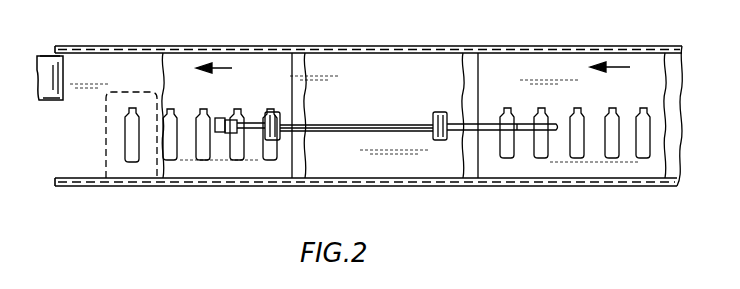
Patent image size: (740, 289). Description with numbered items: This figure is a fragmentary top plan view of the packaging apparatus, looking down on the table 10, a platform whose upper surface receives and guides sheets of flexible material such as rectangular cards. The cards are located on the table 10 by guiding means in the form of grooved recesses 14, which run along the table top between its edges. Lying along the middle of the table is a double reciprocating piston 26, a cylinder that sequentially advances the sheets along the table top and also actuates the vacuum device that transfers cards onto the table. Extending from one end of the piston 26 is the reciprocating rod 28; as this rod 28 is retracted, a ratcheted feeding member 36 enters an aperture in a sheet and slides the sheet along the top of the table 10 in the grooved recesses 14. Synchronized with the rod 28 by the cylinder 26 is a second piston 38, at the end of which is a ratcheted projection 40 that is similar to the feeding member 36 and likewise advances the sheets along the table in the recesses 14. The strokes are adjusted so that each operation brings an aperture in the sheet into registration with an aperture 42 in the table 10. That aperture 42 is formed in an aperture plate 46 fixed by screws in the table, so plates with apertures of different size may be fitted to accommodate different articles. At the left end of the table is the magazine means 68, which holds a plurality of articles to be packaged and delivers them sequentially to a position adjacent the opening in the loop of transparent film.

The table 10 is at (74, 66).
The grooved recesses 14 is at (75, 184).
The double reciprocating piston 26 is at (392, 118).
The reciprocating rod 28 is at (488, 126).
The ratcheted feeding member 36 is at (522, 131).
The piston 38 is at (250, 121).
The ratcheted projection 40 is at (220, 118).
The aperture 42 is at (128, 125).
The aperture plate 46 is at (115, 182).
The magazine means 68 is at (50, 100).